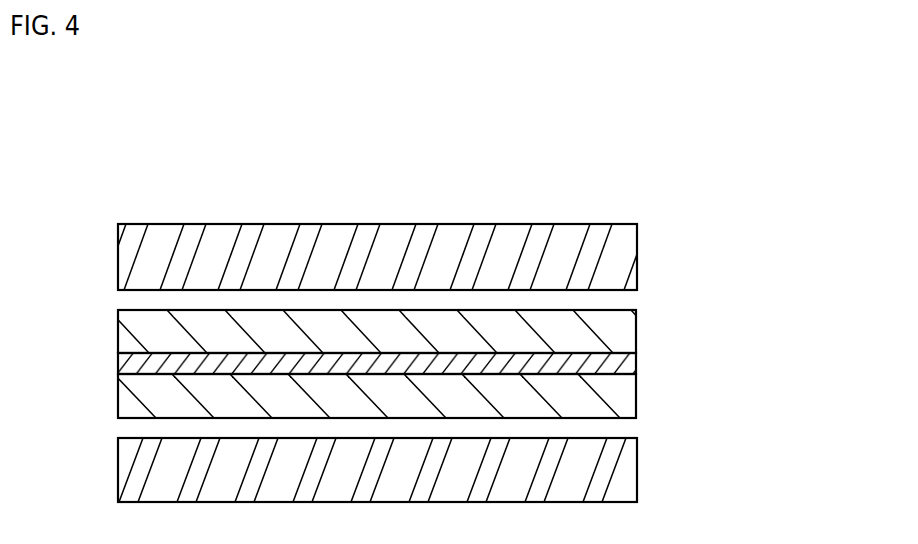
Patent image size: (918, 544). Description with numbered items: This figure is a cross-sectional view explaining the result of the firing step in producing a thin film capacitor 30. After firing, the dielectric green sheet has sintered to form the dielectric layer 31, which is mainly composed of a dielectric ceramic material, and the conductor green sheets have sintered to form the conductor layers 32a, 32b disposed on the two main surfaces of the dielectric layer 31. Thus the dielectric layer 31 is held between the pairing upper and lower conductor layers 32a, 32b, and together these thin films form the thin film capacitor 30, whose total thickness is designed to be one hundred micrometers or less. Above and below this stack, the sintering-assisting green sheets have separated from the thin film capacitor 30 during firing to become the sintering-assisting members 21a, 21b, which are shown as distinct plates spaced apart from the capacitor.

The sintering-assisting member 21a is at (625, 485).
The sintering-assisting member 21b is at (620, 232).
The thin film capacitor 30 is at (502, 332).
The dielectric layer 31 is at (636, 352).
The conductor layer 32a is at (623, 397).
The conductor layer 32b is at (622, 328).